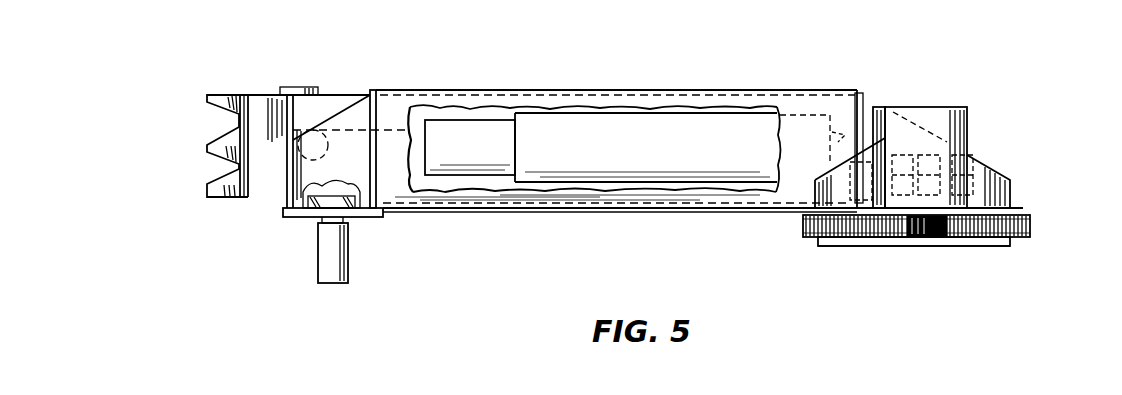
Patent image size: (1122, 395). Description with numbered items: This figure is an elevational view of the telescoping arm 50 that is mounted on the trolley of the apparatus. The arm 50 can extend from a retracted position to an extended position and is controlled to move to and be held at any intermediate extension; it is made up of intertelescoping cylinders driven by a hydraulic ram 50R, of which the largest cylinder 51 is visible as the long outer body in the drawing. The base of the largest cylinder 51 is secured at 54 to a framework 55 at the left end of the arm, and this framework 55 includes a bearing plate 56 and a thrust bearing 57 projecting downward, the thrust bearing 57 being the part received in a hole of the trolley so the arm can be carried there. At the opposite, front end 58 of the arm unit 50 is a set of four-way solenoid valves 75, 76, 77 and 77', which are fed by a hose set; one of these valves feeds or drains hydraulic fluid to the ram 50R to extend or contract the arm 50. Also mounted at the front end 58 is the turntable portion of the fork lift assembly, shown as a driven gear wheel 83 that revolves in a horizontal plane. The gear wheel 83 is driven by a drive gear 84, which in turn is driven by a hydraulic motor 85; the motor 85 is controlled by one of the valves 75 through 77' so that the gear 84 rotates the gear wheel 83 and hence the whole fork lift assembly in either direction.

The telescoping arm 50 is at (648, 89).
The hydraulic ram 50R is at (566, 118).
The largest cylinder 51 is at (775, 100).
The base securing point 54 is at (372, 94).
The framework 55 is at (326, 134).
The bearing plate 56 is at (290, 218).
The thrust bearing 57 is at (318, 260).
The front end of the arm unit 58 is at (879, 106).
The solenoid valve 75 is at (975, 181).
The solenoid valve 76 is at (249, 116).
The solenoid valve 77 is at (914, 239).
The solenoid valve 77' is at (914, 260).
The driven gear wheel 83 is at (1031, 228).
The drive gear 84 is at (932, 238).
The hydraulic motor 85 is at (951, 106).